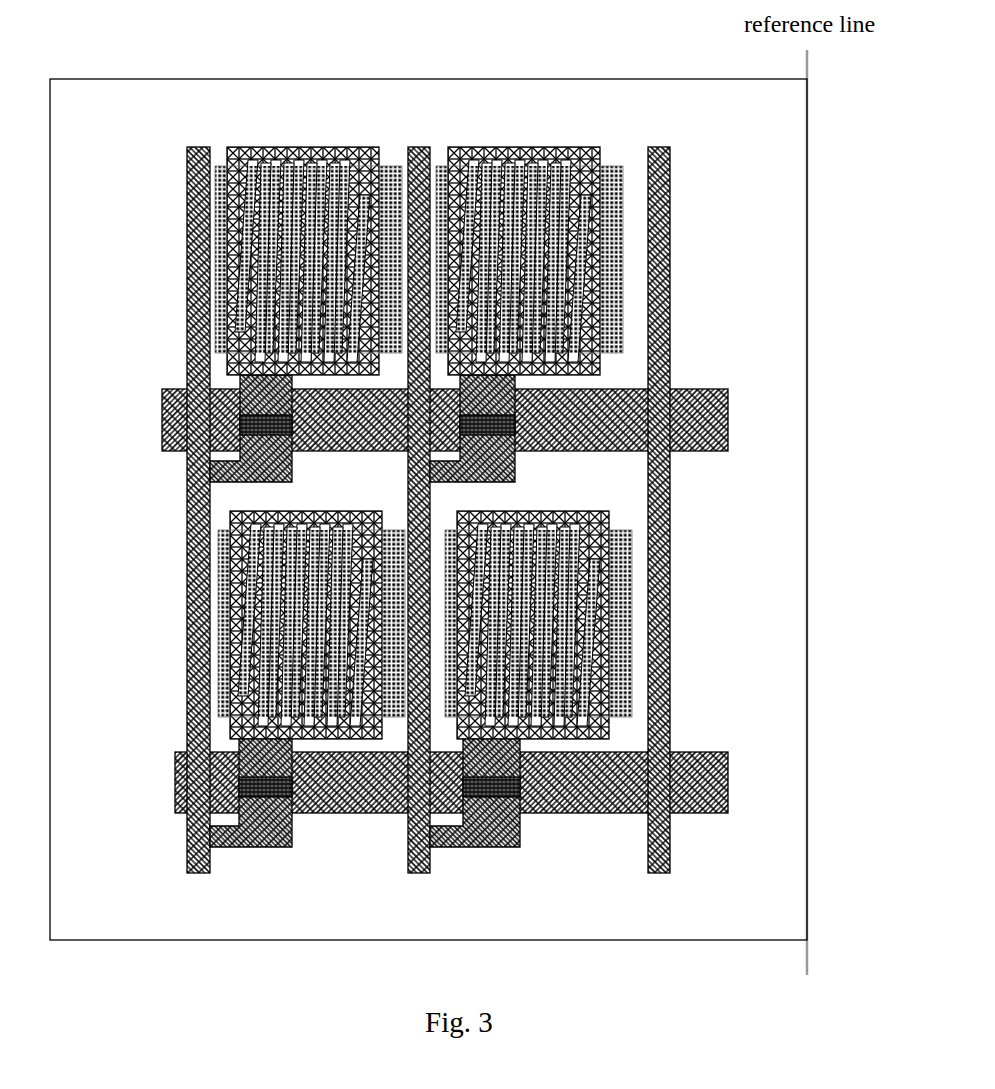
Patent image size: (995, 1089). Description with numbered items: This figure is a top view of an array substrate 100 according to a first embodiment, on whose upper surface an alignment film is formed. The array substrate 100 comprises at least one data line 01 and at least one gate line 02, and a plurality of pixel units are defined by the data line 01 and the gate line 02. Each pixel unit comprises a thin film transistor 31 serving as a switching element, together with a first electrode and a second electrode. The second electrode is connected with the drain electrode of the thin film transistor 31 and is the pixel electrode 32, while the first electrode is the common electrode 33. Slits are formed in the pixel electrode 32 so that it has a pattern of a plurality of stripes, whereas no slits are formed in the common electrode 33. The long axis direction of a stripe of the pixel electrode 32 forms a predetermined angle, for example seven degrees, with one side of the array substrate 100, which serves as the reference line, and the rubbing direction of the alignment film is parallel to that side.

The data line 01 is at (197, 147).
The gate line 02 is at (162, 441).
The thin film transistor 31 is at (290, 436).
The pixel electrode 32 is at (298, 145).
The common electrode 33 is at (388, 166).
The array substrate 100 is at (643, 79).